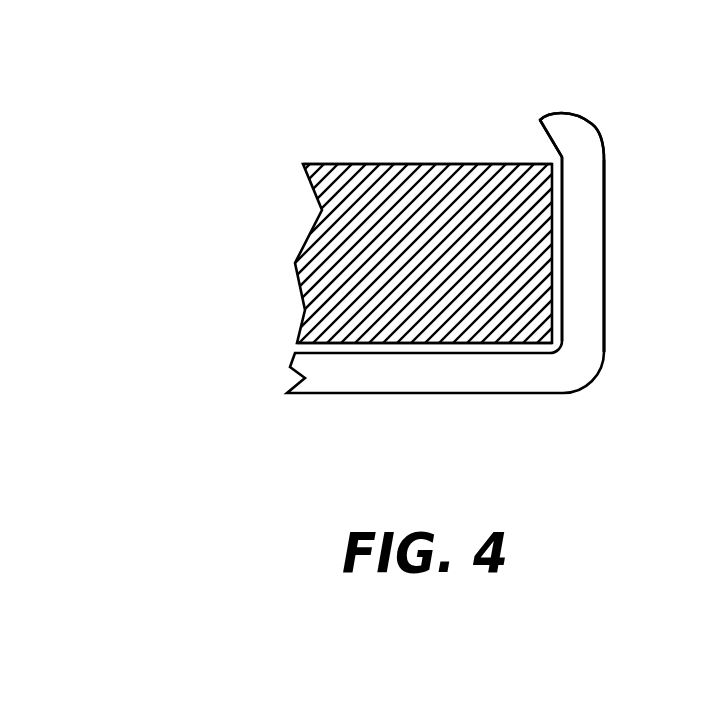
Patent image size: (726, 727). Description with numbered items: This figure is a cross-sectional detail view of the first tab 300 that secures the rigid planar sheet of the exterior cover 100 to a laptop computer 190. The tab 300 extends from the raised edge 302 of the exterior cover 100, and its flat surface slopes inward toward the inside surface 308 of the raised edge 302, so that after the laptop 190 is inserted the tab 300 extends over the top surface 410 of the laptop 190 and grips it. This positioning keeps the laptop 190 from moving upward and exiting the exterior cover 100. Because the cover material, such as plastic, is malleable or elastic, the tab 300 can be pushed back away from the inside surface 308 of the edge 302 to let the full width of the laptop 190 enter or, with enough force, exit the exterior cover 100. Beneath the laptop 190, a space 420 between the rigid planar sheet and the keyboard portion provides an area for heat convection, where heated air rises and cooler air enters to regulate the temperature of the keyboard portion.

The exterior cover 100 is at (598, 375).
The laptop computer 190 is at (352, 163).
The first tab 300 is at (585, 120).
The raised edge 302 is at (607, 233).
The inside surface 308 is at (563, 290).
The top surface 410 is at (430, 165).
The space 420 is at (297, 348).